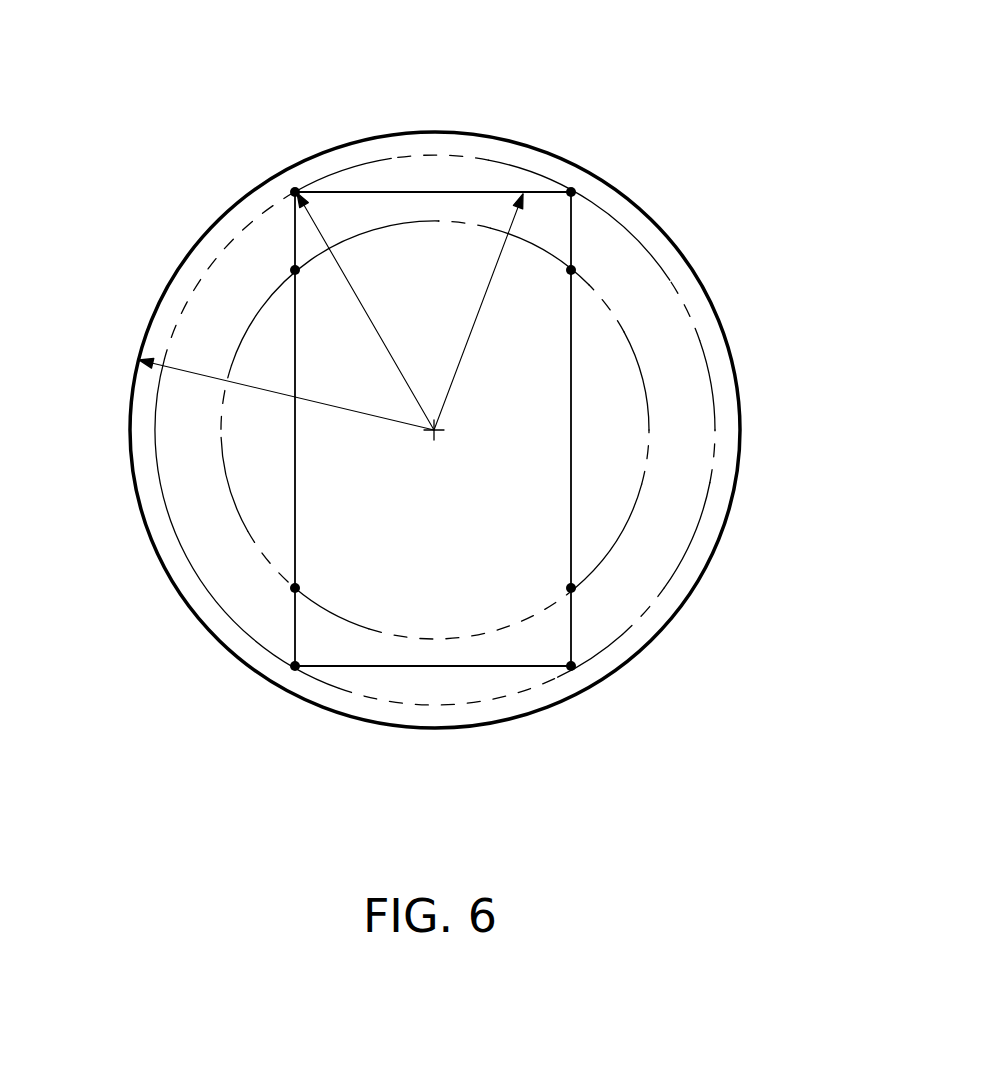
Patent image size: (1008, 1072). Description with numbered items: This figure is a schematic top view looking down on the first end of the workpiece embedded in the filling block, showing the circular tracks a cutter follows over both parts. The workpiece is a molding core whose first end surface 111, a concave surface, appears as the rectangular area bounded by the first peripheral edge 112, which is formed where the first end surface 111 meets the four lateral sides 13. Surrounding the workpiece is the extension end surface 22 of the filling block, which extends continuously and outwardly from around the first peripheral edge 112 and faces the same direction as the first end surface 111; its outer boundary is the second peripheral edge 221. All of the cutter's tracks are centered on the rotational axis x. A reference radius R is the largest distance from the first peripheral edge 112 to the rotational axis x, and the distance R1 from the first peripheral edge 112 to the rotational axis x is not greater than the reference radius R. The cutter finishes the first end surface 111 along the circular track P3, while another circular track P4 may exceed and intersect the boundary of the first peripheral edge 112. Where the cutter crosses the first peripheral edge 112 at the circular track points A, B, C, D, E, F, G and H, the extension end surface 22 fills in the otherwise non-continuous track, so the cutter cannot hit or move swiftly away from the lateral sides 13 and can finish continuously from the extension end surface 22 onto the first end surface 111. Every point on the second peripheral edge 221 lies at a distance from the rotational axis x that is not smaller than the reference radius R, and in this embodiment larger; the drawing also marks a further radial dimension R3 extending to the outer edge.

The lateral sides 13 is at (397, 190).
The extension end surface 22 is at (505, 430).
The second peripheral edge 221 is at (728, 326).
The first end surface 111 is at (520, 472).
The first peripheral edge 112 is at (571, 407).
The circular track P3 is at (490, 163).
The circular track P4 is at (221, 438).
The circular track point A is at (295, 192).
The circular track point B is at (571, 192).
The circular track point C is at (571, 666).
The circular track point D is at (295, 666).
The circular track point E is at (295, 270).
The circular track point F is at (571, 270).
The circular track point G is at (571, 588).
The circular track point H is at (295, 588).
The rotational axis x is at (434, 430).
The reference radius R is at (365, 311).
The distance from first peripheral edge to rotational axis R1 is at (478, 312).
The radius R3 is at (286, 394).